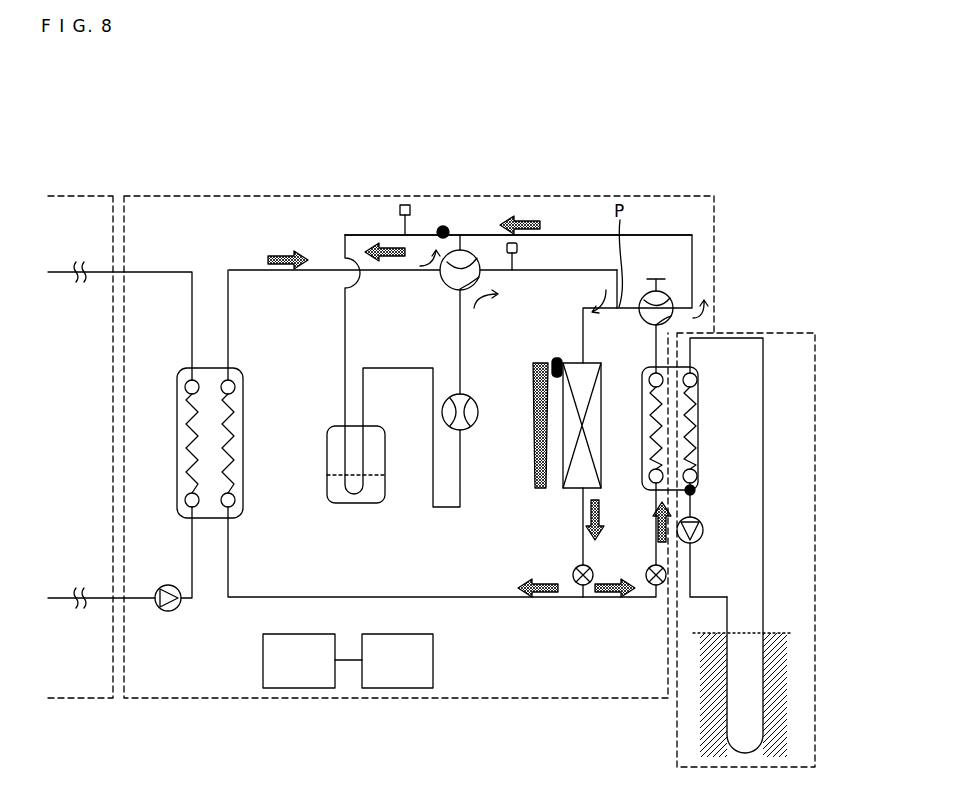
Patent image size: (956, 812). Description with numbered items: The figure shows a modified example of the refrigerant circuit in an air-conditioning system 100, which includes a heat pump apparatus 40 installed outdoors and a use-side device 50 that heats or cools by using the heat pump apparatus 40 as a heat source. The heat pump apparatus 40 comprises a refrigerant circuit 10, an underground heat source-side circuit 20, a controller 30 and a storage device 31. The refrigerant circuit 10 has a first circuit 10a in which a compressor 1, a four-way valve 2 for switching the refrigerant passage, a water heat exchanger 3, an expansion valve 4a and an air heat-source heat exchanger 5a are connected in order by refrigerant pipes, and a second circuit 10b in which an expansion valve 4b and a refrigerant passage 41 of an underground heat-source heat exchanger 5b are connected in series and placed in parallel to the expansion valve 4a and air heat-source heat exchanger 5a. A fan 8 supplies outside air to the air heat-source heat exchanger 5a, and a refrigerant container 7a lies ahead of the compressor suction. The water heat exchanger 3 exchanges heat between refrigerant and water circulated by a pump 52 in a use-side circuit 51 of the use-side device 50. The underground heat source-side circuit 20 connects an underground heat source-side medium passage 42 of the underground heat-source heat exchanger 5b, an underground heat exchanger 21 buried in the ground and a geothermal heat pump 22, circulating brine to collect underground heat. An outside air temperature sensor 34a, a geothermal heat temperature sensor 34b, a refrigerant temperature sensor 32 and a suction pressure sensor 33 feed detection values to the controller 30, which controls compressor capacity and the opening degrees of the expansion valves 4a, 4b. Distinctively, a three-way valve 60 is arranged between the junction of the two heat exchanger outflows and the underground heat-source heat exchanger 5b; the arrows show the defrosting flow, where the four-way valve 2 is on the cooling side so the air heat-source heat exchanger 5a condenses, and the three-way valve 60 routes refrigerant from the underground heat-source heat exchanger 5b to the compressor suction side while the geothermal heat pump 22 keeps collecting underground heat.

The compressor 1 is at (466, 430).
The four-way valve 2 is at (472, 256).
The water heat exchanger 3 is at (244, 372).
The expansion valve 4a is at (574, 567).
The expansion valve 4b is at (648, 567).
The air heat-source heat exchanger 5a is at (592, 370).
The underground heat-source heat exchanger 5b is at (700, 385).
The refrigerant container 7a is at (345, 505).
The fan 8 is at (533, 408).
The refrigerant circuit 10 is at (590, 194).
The first circuit 10a is at (585, 306).
The second circuit 10b is at (656, 345).
The underground heat source-side circuit 20 is at (782, 332).
The underground heat exchanger 21 is at (770, 645).
The geothermal heat pump 22 is at (703, 535).
The controller 30 is at (302, 634).
The storage device 31 is at (436, 668).
The refrigerant temperature sensor 32 is at (447, 228).
The suction pressure sensor 33 is at (411, 209).
The outside air temperature sensor 34a is at (556, 358).
The geothermal heat temperature sensor 34b is at (700, 490).
The heat pump apparatus 40 is at (751, 210).
The refrigerant passage 41 is at (645, 412).
The underground heat source-side medium passage 42 is at (699, 424).
The use-side device 50 is at (75, 198).
The use-side circuit 51 is at (98, 270).
The pump 52 is at (163, 586).
The three-way valve 60 is at (663, 292).
The air-conditioning system 100 is at (743, 135).